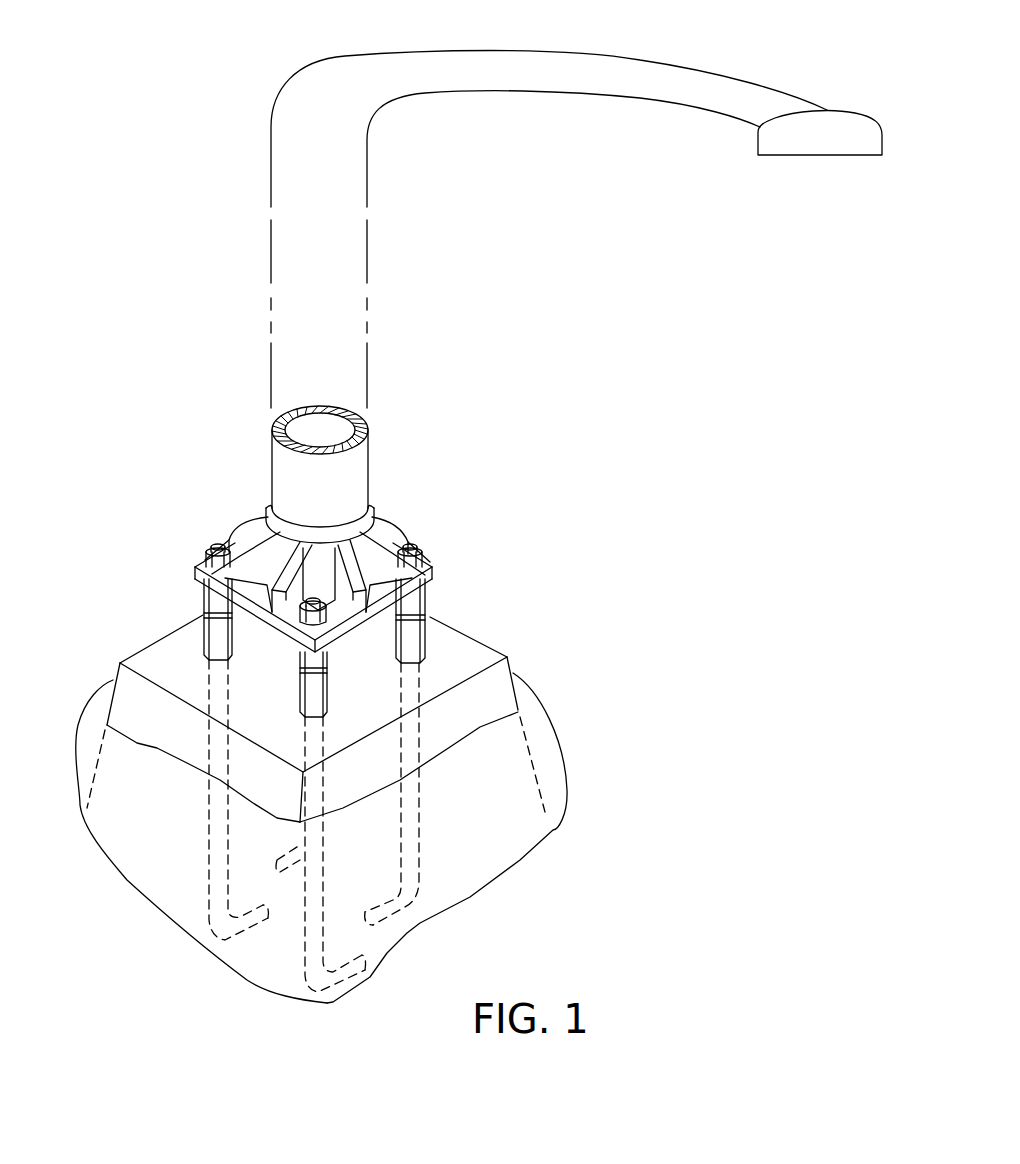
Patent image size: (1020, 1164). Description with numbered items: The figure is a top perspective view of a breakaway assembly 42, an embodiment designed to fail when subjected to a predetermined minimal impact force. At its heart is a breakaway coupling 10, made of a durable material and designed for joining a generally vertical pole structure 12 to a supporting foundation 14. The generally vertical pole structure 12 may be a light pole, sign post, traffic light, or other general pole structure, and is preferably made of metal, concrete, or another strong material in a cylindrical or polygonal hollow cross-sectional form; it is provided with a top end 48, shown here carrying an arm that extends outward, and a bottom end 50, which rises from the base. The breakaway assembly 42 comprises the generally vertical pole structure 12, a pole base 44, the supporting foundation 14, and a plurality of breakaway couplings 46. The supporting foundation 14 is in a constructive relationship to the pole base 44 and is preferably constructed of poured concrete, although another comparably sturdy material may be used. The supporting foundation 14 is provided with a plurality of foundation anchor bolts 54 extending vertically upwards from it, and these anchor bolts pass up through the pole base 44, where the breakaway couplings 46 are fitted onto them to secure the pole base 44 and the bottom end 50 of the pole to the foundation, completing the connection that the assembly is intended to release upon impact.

The breakaway coupling 10 is at (440, 597).
The generally vertical pole structure 12 is at (270, 268).
The supporting foundation 14 is at (510, 662).
The breakaway assembly 42 is at (250, 490).
The pole base 44 is at (408, 533).
The breakaway couplings 46 is at (203, 598).
The top end 48 is at (313, 67).
The bottom end 50 is at (372, 463).
The foundation anchor bolts 54 is at (208, 832).